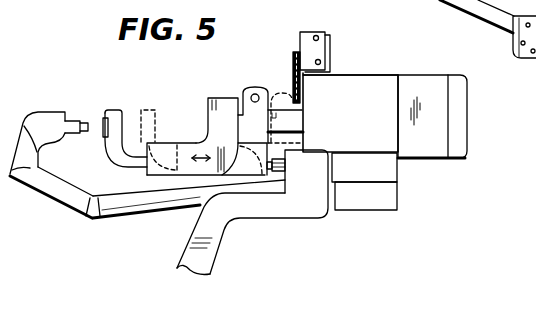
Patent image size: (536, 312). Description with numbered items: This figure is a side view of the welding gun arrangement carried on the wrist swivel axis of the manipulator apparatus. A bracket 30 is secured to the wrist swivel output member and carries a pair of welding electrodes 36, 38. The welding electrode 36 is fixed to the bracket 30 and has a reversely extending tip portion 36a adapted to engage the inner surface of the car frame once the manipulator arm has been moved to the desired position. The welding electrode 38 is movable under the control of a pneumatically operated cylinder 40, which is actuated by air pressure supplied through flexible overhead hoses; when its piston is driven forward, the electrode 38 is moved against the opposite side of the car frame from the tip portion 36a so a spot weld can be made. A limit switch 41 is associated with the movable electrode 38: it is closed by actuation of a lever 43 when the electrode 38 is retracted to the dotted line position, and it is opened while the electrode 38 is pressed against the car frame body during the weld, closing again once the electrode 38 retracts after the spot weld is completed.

The bracket 30 is at (217, 252).
The welding electrode 36 is at (13, 133).
The tip portion 36a is at (82, 121).
The welding electrode 38 is at (115, 111).
The pneumatically operated cylinder 40 is at (360, 88).
The limit switch 41 is at (312, 31).
The lever 43 is at (294, 78).